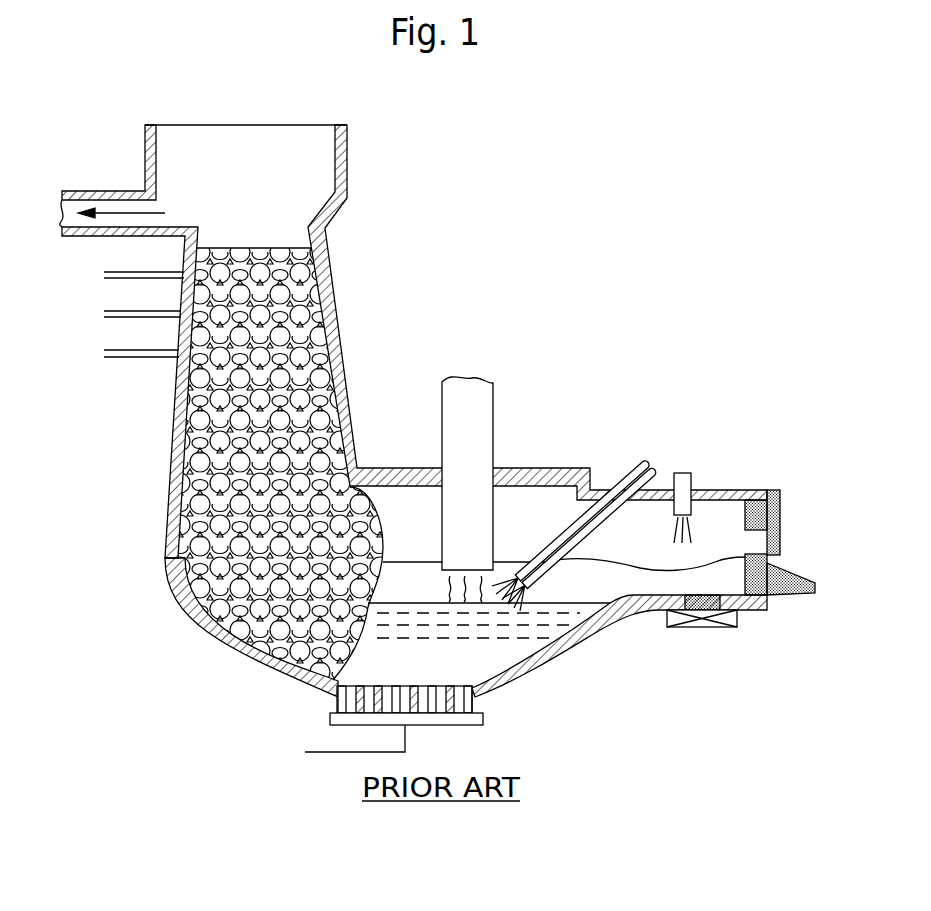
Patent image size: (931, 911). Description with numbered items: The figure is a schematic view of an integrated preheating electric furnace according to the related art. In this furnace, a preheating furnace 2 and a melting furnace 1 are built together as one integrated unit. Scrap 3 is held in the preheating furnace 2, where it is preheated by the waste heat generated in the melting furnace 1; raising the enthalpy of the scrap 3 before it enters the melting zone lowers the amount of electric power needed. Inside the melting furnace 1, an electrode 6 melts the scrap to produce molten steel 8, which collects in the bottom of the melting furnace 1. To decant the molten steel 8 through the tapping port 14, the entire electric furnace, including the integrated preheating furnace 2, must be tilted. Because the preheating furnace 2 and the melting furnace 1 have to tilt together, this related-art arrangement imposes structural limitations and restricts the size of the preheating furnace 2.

The melting furnace 1 is at (560, 497).
The preheating furnace 2 is at (312, 262).
The scrap 3 is at (280, 470).
The electrode 6 is at (450, 423).
The molten steel 8 is at (556, 648).
The tapping port 14 is at (727, 597).